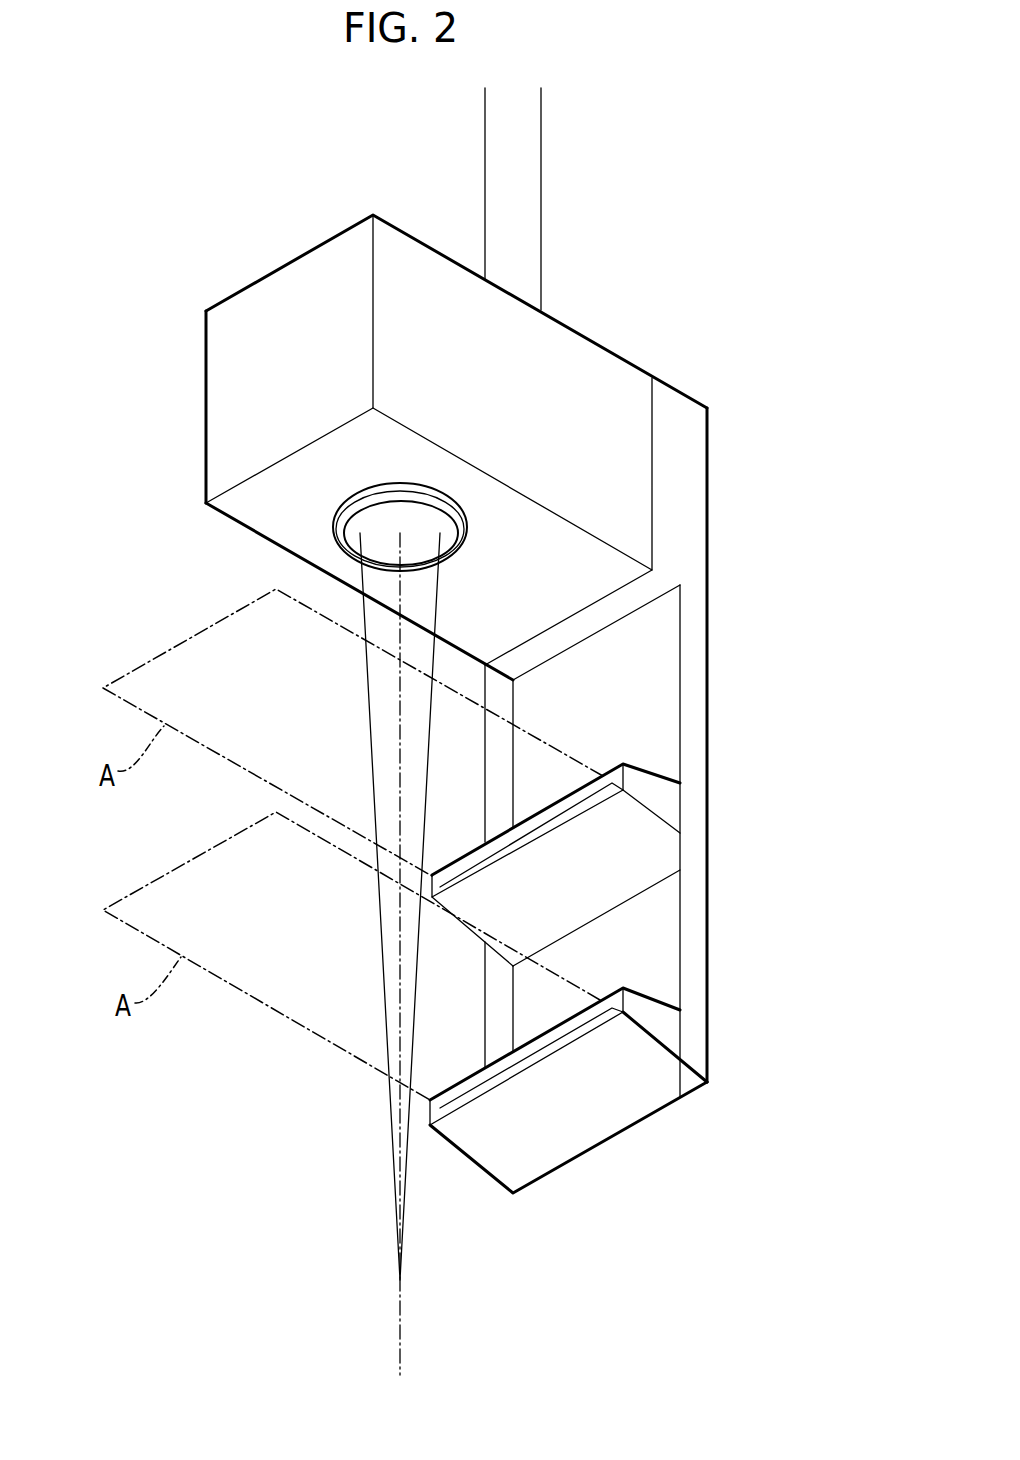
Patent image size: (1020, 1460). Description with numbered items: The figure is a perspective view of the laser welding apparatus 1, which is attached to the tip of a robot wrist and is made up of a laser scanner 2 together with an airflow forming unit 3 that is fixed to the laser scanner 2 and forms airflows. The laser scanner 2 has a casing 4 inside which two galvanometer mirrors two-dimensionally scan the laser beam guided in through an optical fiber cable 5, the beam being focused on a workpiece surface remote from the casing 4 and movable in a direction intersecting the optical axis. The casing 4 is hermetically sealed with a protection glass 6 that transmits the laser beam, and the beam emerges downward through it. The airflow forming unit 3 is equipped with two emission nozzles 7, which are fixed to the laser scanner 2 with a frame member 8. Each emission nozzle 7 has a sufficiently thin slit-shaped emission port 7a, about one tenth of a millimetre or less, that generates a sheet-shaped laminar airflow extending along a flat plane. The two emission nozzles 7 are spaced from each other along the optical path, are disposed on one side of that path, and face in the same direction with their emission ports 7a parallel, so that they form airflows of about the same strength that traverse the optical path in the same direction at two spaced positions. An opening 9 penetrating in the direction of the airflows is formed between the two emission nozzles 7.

The laser welding apparatus 1 is at (104, 216).
The laser scanner 2 is at (228, 278).
The airflow forming unit 3 is at (606, 1155).
The casing 4 is at (327, 278).
The optical fiber cable 5 is at (520, 173).
The protection glass 6 is at (377, 515).
The emission nozzle 7 is at (662, 800).
The emission port 7a is at (553, 822).
The frame member 8 is at (693, 671).
The opening 9 is at (680, 939).